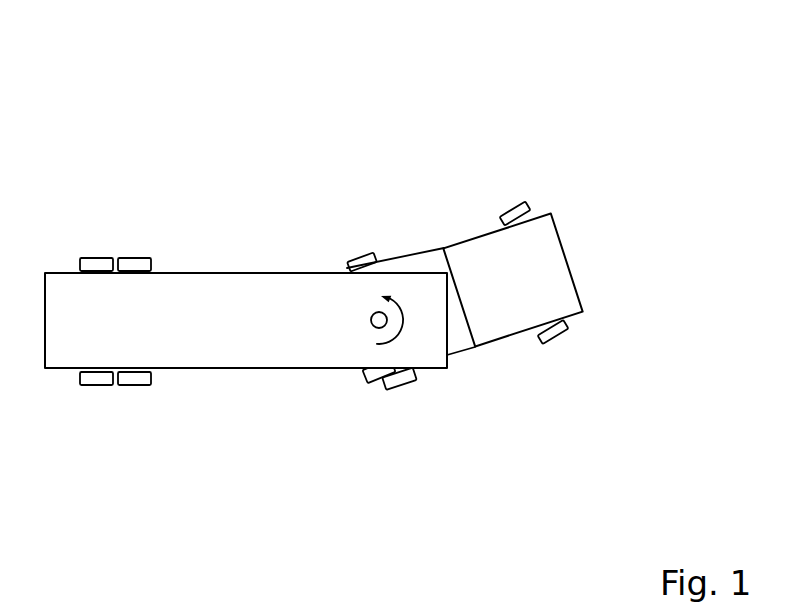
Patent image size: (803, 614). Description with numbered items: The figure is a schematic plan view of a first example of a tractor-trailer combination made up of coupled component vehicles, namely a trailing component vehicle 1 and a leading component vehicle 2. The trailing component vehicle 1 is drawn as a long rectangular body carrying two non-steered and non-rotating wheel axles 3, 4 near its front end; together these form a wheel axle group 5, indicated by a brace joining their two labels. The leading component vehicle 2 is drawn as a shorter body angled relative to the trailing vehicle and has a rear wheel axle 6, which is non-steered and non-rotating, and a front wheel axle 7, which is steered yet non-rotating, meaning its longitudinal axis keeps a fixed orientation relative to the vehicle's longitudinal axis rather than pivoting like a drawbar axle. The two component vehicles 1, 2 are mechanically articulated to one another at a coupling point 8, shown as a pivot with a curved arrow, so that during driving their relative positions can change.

The trailing component vehicle 1 is at (237, 297).
The leading component vehicle 2 is at (491, 184).
The wheel axle 3 is at (97, 240).
The wheel axle 4 is at (134, 240).
The wheel axle group 5 is at (152, 113).
The rear wheel axle 6 is at (352, 238).
The front wheel axle 7 is at (502, 189).
The coupling point 8 is at (373, 328).